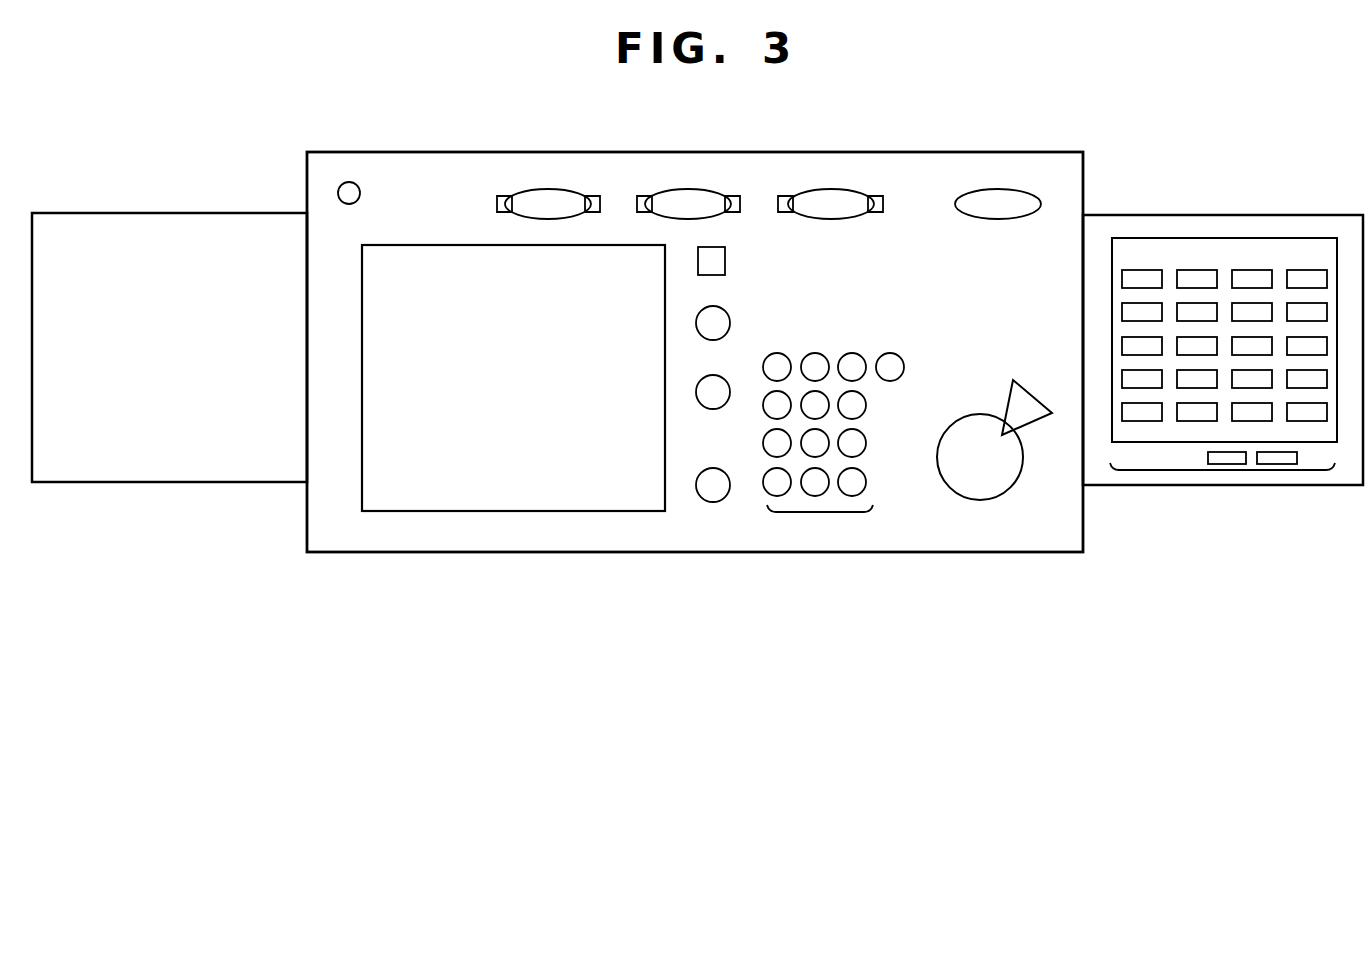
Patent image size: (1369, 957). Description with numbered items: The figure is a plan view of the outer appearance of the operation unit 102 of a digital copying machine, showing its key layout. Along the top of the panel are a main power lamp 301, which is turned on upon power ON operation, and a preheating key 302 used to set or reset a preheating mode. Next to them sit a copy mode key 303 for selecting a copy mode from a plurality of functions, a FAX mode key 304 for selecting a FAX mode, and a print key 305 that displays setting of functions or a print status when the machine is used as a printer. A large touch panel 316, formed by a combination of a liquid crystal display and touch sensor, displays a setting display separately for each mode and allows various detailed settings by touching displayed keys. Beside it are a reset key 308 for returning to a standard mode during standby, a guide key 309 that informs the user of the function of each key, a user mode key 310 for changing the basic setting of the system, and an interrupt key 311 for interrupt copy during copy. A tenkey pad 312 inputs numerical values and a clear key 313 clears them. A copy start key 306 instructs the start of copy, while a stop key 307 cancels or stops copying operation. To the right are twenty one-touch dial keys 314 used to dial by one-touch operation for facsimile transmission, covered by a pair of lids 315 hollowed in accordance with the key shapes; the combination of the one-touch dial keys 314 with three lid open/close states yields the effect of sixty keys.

The operation unit 102 is at (488, 152).
The main power lamp 301 is at (1003, 190).
The preheating key 302 is at (344, 182).
The copy mode key 303 is at (573, 190).
The FAX mode key 304 is at (703, 190).
The print key 305 is at (850, 190).
The copy start key 306 is at (950, 490).
The stop key 307 is at (1033, 398).
The reset key 308 is at (697, 258).
The guide key 309 is at (697, 327).
The user mode key 310 is at (697, 395).
The interrupt key 311 is at (697, 488).
The tenkey pad 312 is at (818, 512).
The clear key 313 is at (892, 353).
The one-touch dial keys 314 is at (1225, 470).
The pair of lids 315 is at (1218, 240).
The touch panel 316 is at (428, 512).